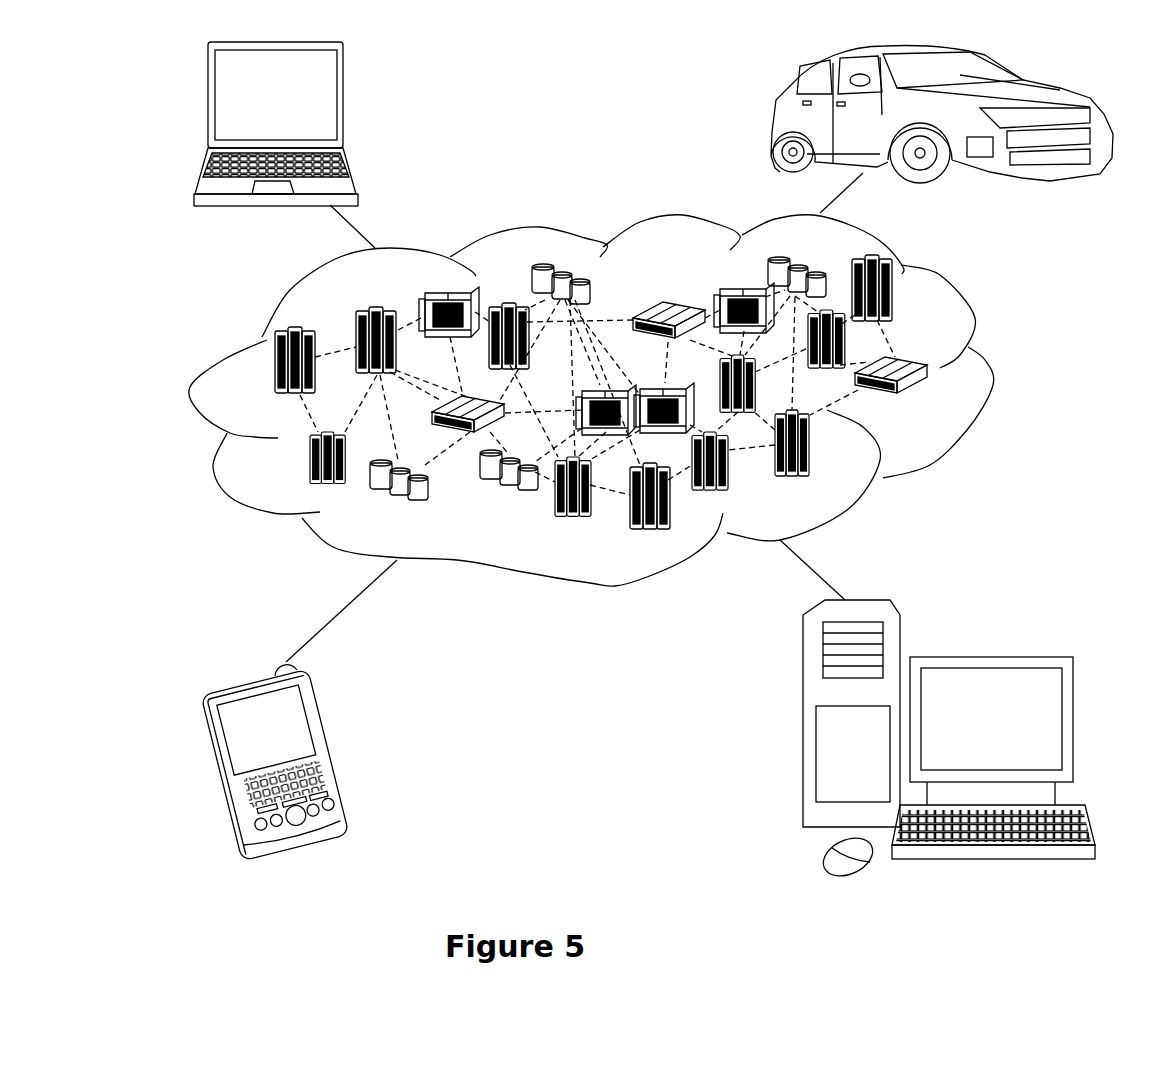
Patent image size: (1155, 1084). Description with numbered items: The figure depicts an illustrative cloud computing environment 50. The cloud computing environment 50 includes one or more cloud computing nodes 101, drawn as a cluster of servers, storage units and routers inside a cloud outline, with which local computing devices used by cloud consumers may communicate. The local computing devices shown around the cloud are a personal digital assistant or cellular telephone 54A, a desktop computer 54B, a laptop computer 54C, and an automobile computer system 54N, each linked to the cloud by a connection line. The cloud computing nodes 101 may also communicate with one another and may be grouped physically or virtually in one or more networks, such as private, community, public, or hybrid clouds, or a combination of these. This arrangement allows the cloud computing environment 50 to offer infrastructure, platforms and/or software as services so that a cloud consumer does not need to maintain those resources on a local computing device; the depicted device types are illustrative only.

The cloud computing environment 50 is at (985, 370).
The cloud computing nodes 101 is at (940, 403).
The personal digital assistant or cellular telephone 54A is at (342, 752).
The desktop computer 54B is at (988, 657).
The laptop computer 54C is at (344, 104).
The automobile computer system 54N is at (775, 118).